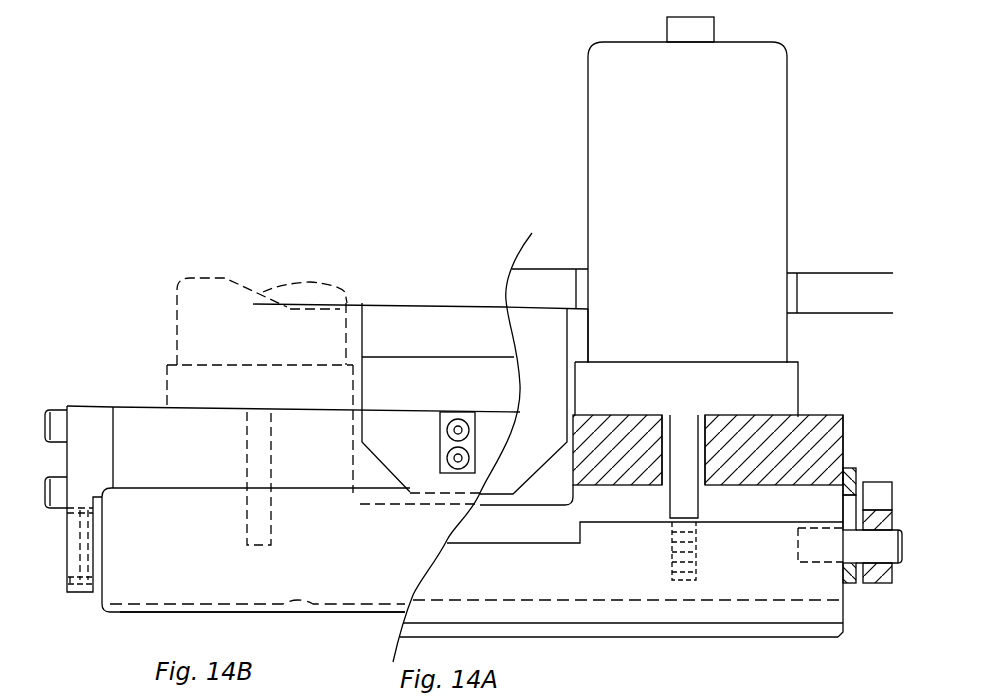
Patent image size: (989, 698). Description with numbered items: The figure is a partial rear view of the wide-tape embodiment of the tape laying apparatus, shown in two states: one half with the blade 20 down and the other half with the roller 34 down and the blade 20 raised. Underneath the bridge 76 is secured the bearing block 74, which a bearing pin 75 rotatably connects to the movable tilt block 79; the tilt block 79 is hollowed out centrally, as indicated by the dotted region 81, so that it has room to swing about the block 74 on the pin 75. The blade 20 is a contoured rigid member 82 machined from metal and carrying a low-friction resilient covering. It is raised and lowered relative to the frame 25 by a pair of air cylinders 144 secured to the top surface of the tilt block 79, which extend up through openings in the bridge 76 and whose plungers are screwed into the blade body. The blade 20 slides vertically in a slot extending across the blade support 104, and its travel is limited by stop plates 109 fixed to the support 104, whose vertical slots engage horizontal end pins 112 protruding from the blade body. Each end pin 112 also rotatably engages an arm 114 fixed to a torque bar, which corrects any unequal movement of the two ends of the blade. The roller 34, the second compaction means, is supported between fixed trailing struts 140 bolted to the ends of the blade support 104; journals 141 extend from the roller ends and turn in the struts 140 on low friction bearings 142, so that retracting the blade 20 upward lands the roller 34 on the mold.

In FIG. 14B, the blade 20 is at (320, 613).
In FIG. 14A, the blade 20 is at (783, 638).
In FIG. 14B, the frame 25 is at (437, 178).
In FIG. 14B, the roller 34 is at (160, 614).
In FIG. 14B, the bearing block 74 is at (383, 397).
In FIG. 14A, the bearing block 74 is at (553, 408).
In FIG. 14B, the bearing pin 75 is at (448, 458).
In FIG. 14A, the bridge 76 is at (850, 311).
In FIG. 14A, the tilt block 79 is at (739, 478).
In FIG. 14A, the hollowed-out portion of tilt block 81 is at (553, 500).
In FIG. 14A, the blade core member 82 is at (628, 581).
In FIG. 14A, the blade support 104 is at (810, 423).
In FIG. 14A, the stop plate 109 is at (855, 468).
In FIG. 14A, the end pin 112 is at (897, 562).
In FIG. 14A, the arm 114 is at (890, 513).
In FIG. 14B, the trailing strut 140 is at (89, 404).
In FIG. 14B, the journal 141 is at (66, 557).
In FIG. 14B, the bearing 142 is at (70, 578).
In FIG. 14B, the air cylinder 144 is at (232, 261).
In FIG. 14A, the air cylinder 144 is at (708, 190).